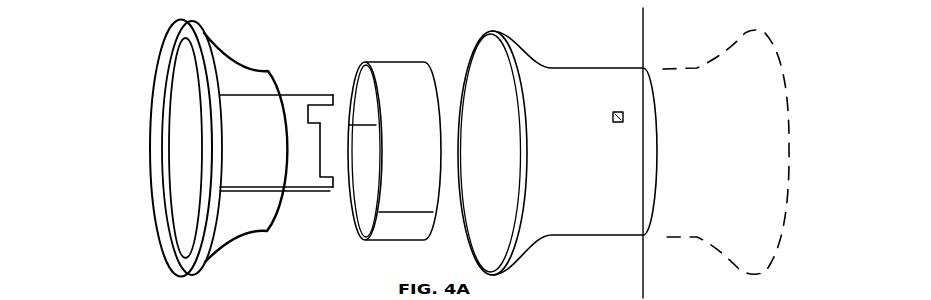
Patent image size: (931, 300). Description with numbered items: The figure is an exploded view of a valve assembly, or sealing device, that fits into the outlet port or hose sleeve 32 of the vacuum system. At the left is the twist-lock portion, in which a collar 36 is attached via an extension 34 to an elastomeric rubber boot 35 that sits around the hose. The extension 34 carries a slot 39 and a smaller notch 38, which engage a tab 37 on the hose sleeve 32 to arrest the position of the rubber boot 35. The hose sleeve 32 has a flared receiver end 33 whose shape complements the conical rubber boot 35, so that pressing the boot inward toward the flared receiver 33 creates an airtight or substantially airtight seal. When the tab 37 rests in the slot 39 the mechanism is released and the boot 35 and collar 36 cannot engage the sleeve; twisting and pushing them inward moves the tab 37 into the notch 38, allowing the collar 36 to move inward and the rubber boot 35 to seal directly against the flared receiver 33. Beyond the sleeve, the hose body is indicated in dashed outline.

The hose sleeve 32 is at (718, 78).
The flared receiver end 33 is at (557, 153).
The extension 34 is at (182, 148).
The rubber boot 35 is at (242, 82).
The collar 36 is at (393, 72).
The tab 37 is at (613, 123).
The notch 38 is at (315, 115).
The slot 39 is at (324, 152).